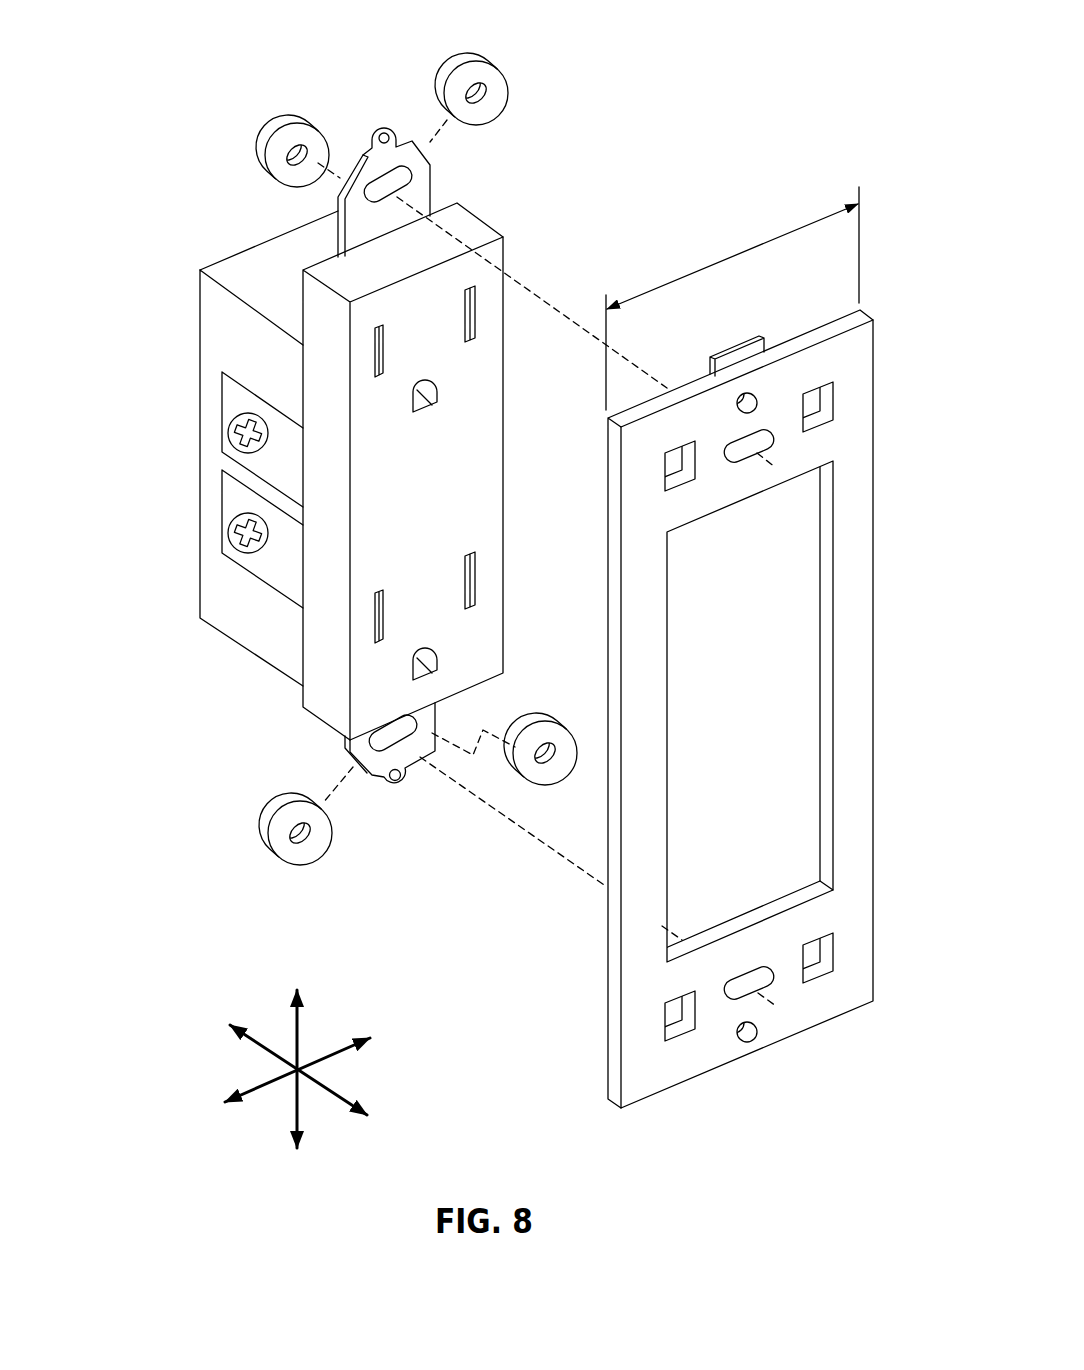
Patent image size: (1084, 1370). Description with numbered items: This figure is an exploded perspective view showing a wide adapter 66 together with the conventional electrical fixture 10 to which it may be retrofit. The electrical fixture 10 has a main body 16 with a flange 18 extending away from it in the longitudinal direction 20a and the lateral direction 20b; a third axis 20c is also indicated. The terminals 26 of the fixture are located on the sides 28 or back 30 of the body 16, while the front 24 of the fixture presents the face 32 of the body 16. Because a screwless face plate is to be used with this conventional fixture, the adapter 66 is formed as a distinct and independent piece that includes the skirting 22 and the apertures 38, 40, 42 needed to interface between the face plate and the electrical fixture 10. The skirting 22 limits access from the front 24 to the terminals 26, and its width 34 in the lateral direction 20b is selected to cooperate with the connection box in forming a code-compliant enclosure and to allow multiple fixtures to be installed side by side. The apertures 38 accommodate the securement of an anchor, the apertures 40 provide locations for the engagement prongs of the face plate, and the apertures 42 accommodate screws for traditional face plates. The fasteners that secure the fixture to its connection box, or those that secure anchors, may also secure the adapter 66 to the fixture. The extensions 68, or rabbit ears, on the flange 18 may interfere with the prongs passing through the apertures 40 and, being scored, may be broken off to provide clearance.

The electrical fixture 10 is at (516, 203).
The main body 16 is at (194, 645).
The flange 18 is at (420, 180).
The longitudinal direction 20a is at (300, 1013).
The lateral direction 20b is at (343, 1052).
The depth axis 20c is at (332, 1097).
The skirting 22 is at (853, 547).
The front 24 is at (400, 505).
The terminals 26 is at (234, 527).
The sides 28 is at (222, 320).
The back 30 is at (224, 251).
The face 32 is at (383, 488).
The width 34 is at (723, 260).
The apertures 38 is at (752, 463).
The apertures 40 is at (677, 443).
The apertures 42 is at (763, 400).
The adapter 66 is at (878, 702).
The extensions 68 is at (300, 125).